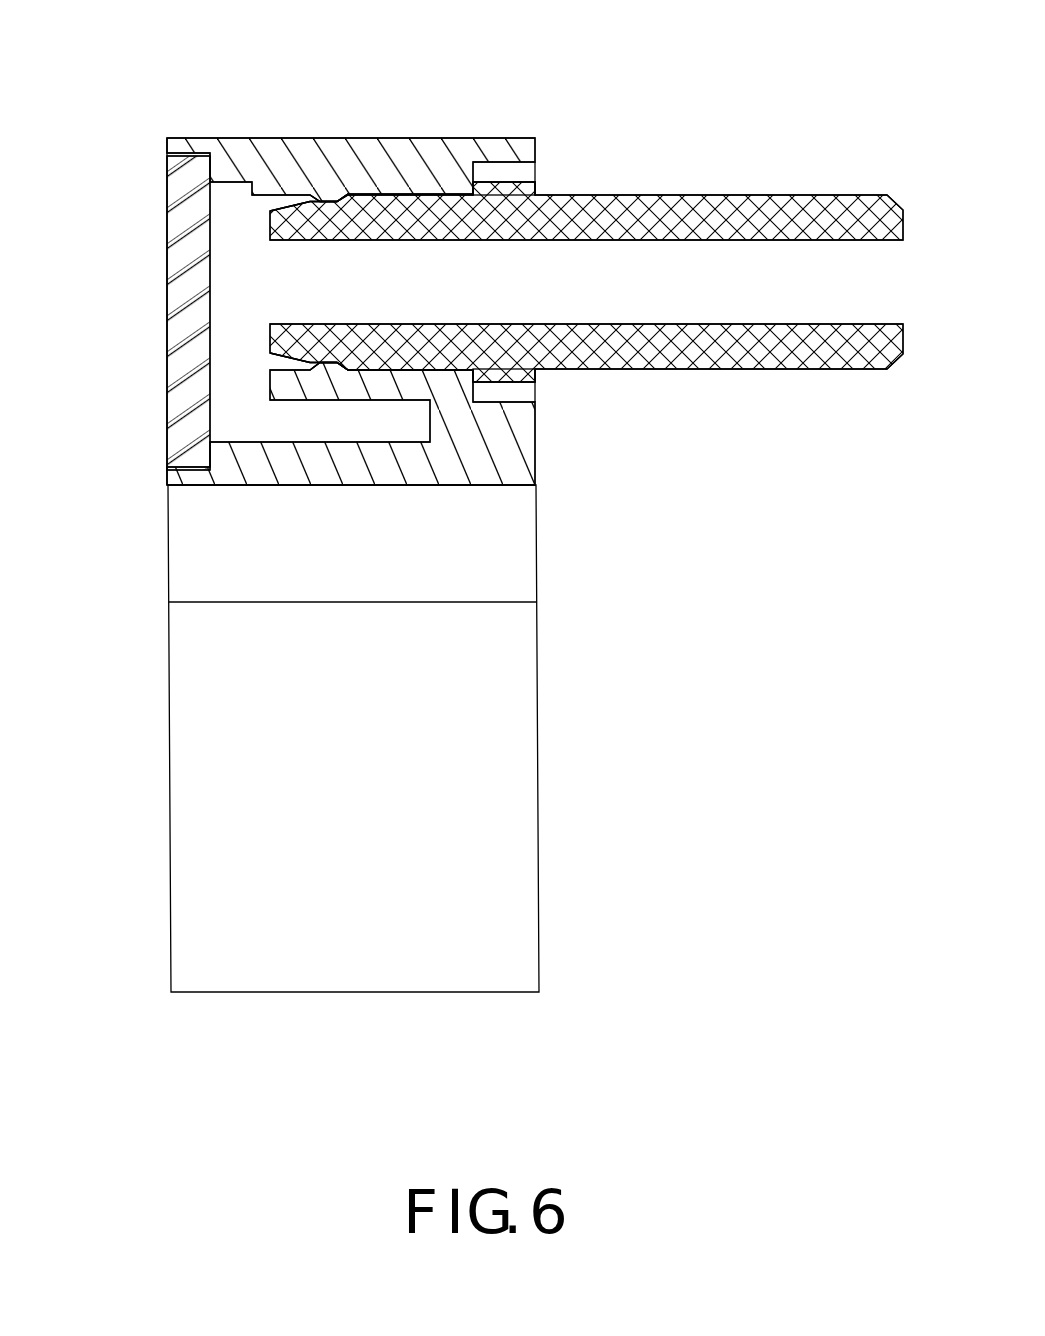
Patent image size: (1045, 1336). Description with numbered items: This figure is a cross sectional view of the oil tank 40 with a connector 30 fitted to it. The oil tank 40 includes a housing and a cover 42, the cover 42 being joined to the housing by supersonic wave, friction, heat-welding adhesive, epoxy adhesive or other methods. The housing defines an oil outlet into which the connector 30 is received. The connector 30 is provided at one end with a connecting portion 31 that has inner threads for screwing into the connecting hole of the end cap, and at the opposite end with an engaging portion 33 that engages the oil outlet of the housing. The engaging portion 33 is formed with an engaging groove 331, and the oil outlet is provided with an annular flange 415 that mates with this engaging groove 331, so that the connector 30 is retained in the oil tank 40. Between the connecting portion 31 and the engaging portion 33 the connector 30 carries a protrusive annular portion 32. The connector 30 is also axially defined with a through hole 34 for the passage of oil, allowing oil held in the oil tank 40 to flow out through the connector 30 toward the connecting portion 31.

The connector 30 is at (470, 248).
The connecting portion 31 is at (798, 213).
The protrusive annular portion 32 is at (503, 195).
The engaging portion 33 is at (330, 208).
The engaging groove 331 is at (333, 352).
The through hole 34 is at (633, 292).
The oil tank 40 is at (365, 137).
The annular flange 415 is at (327, 196).
The cover 42 is at (187, 308).